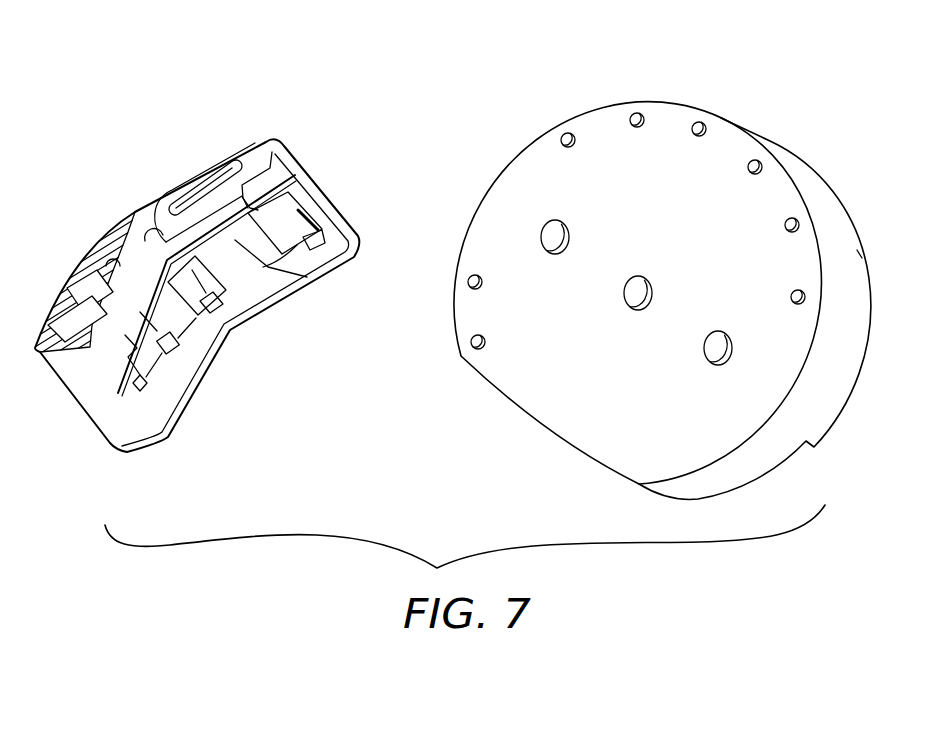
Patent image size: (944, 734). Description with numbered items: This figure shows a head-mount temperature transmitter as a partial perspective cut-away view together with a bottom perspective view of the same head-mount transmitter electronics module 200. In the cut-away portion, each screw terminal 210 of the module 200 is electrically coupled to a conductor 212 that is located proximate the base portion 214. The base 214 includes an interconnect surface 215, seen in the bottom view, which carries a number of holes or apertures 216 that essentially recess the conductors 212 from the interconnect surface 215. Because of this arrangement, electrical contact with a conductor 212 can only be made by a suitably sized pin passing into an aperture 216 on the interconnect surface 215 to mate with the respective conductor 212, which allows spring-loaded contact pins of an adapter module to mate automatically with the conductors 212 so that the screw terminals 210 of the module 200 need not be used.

The head-mount transmitter electronics module 200 is at (182, 135).
The screw terminal 210 is at (112, 262).
The conductor 212 is at (228, 322).
The base portion 214 is at (317, 285).
The interconnect surface 215 is at (558, 382).
The aperture 216 is at (698, 122).